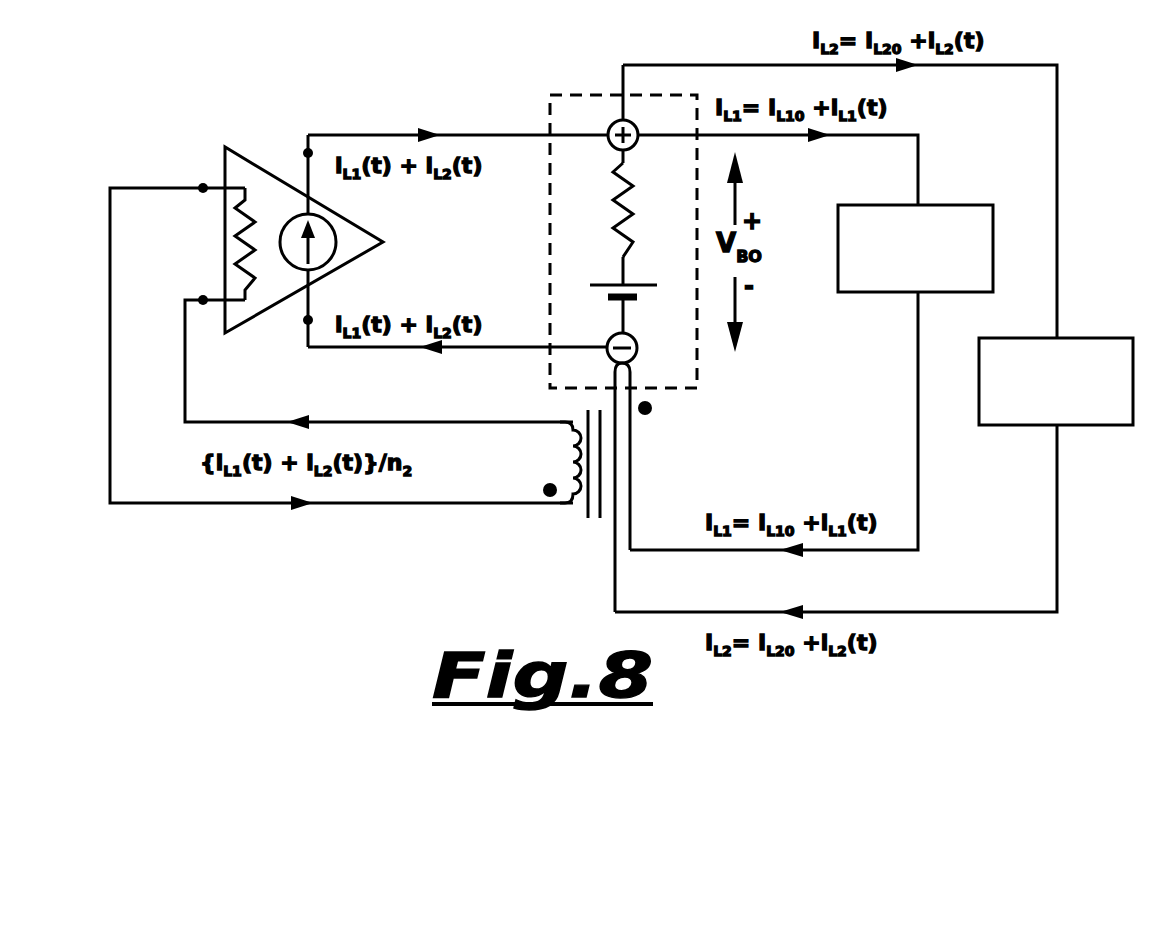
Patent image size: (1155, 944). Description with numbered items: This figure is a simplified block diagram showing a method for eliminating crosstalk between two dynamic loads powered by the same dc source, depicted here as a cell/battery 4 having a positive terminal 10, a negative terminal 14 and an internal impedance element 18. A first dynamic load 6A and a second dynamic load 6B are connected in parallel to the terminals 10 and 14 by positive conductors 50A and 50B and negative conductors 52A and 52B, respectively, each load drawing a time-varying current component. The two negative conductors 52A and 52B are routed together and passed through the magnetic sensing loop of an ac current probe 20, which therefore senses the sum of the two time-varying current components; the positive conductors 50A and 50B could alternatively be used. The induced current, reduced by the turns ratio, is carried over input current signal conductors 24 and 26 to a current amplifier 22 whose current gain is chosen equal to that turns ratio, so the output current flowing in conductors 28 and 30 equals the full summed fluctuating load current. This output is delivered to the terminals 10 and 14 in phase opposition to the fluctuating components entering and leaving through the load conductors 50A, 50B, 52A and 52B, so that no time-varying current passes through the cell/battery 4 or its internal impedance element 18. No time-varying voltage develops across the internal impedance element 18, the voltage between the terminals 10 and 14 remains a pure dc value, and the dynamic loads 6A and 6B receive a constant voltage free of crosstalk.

The cell/battery 4 is at (595, 215).
The positive terminal 10 is at (608, 137).
The negative terminal 14 is at (605, 342).
The internal impedance element 18 is at (633, 200).
The ac current probe 20 is at (572, 517).
The current amplifier 22 is at (247, 160).
The input current signal conductor 24 is at (112, 207).
The input current signal conductor 26 is at (182, 397).
The output conductor 28 is at (345, 132).
The output conductor 30 is at (333, 350).
The positive conductor 50A is at (918, 193).
The positive conductor 50B is at (1052, 218).
The negative conductor 52A is at (915, 388).
The negative conductor 52B is at (1018, 605).
The Dynamic Load 1 6A is at (838, 277).
The Dynamic Load 2 6B is at (978, 400).